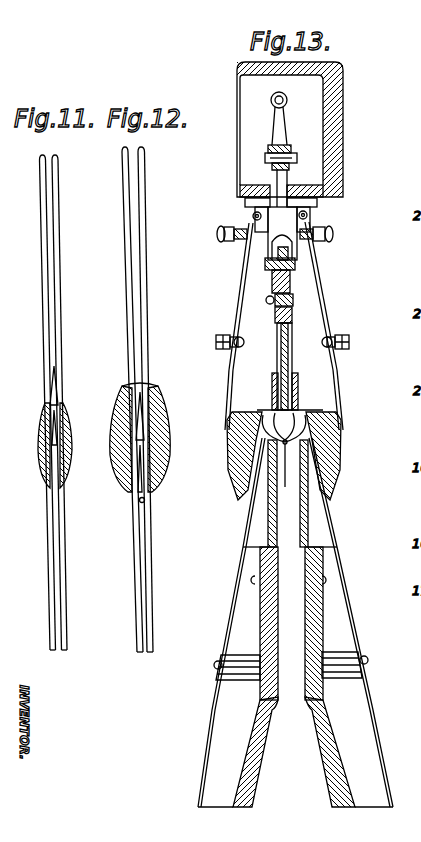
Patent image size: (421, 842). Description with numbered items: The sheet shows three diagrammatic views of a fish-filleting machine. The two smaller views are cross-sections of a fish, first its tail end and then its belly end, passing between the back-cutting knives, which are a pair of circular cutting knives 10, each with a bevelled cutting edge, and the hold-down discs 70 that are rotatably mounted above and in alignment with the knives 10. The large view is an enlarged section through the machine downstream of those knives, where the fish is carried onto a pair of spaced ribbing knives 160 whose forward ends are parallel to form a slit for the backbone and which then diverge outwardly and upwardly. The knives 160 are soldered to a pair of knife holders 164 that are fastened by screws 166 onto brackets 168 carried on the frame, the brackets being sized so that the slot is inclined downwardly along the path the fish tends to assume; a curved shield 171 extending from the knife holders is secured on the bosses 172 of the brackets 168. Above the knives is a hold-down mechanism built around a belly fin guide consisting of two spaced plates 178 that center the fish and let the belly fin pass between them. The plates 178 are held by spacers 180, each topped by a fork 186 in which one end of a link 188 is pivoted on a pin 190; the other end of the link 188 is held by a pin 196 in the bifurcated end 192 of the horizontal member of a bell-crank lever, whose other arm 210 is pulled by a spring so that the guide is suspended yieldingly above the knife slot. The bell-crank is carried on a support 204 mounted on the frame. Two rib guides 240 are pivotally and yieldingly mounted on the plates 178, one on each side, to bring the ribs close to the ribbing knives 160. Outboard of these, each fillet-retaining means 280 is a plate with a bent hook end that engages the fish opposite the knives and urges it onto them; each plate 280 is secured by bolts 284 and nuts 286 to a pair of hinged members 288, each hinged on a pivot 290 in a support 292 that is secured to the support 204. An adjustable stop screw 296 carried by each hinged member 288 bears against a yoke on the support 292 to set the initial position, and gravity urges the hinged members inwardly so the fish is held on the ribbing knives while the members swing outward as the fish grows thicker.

In FIG. 11, the circular cutting knives 10 is at (54, 413).
In FIG. 12, the circular cutting knives 10 is at (137, 409).
In FIG. 11, the hold-down discs 70 is at (58, 300).
In FIG. 12, the hold-down discs 70 is at (146, 300).
In FIG. 13, the ribbing knives 160 is at (230, 463).
In FIG. 13, the knife holders 164 is at (301, 522).
In FIG. 13, the screws 166 is at (252, 580).
In FIG. 13, the brackets 168 is at (325, 750).
In FIG. 13, the curved shield 171 is at (226, 628).
In FIG. 13, the bosses 172 is at (242, 680).
In FIG. 13, the plates 178 is at (290, 356).
In FIG. 13, the spacers 180 is at (278, 315).
In FIG. 13, the fork 186 is at (291, 277).
In FIG. 13, the link 188 is at (281, 177).
In FIG. 13, the pin 190 is at (293, 300).
In FIG. 13, the bifurcated end 192 is at (265, 158).
In FIG. 13, the pin 196 is at (291, 150).
In FIG. 13, the support 204 is at (318, 203).
In FIG. 13, the arm 210 is at (284, 122).
In FIG. 13, the rib guides 240 is at (273, 394).
In FIG. 13, the fillet-retaining means 280 is at (229, 389).
In FIG. 13, the bolts 284 is at (216, 342).
In FIG. 13, the nuts 286 is at (231, 336).
In FIG. 13, the hinged members 288 is at (242, 277).
In FIG. 13, the pivot 290 is at (308, 216).
In FIG. 13, the support 292 is at (298, 242).
In FIG. 13, the adjustable stop screw 296 is at (220, 234).